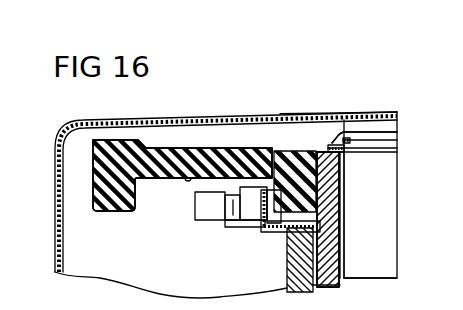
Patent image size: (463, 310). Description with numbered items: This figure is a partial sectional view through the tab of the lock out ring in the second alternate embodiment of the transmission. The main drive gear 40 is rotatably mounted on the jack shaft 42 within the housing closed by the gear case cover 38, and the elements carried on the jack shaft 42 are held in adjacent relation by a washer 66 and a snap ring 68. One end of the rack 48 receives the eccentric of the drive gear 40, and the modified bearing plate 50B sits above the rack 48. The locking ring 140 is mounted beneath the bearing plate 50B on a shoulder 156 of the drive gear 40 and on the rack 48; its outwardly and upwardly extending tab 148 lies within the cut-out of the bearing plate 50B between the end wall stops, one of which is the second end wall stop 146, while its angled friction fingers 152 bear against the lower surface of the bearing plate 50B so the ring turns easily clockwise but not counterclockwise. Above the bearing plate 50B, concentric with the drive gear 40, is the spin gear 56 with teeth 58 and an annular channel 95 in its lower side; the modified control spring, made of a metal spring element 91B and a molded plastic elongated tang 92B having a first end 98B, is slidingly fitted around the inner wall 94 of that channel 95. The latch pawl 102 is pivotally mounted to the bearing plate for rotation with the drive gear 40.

The teeth 58 is at (90, 147).
The spin gear 56 is at (213, 147).
The annular channel 95 is at (178, 153).
The elongated tang 92B is at (232, 160).
The latch pawl 102 is at (205, 207).
The first end 98B is at (247, 208).
The second end wall stop 146 is at (233, 228).
The locking ring 140 is at (282, 233).
The tab 148 is at (270, 149).
The rack 48 is at (293, 260).
The inner wall 94 is at (323, 197).
The metal spring element 91B is at (298, 222).
The angled friction fingers 152 is at (322, 238).
The modified bearing plate 50B is at (397, 230).
The jack shaft 42 is at (367, 176).
The shoulder 156 is at (340, 268).
The main drive gear 40 is at (337, 266).
The gear case cover 38 is at (310, 116).
The washer 66 is at (323, 113).
The snap ring 68 is at (328, 136).